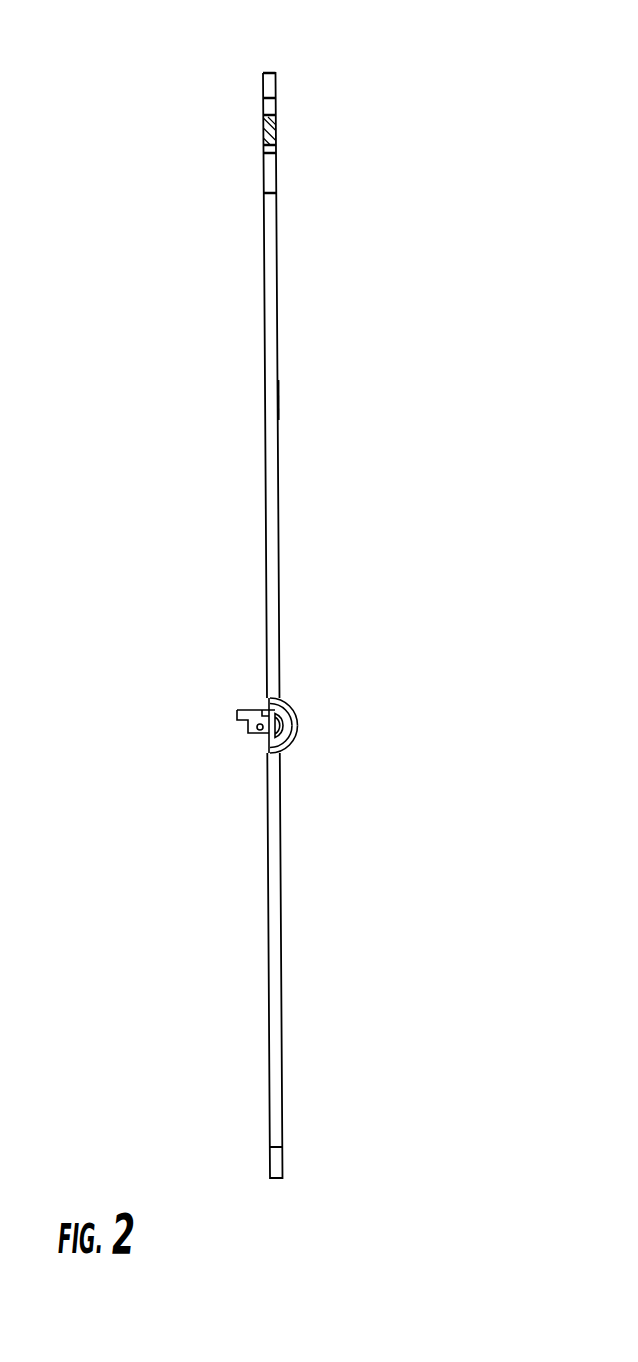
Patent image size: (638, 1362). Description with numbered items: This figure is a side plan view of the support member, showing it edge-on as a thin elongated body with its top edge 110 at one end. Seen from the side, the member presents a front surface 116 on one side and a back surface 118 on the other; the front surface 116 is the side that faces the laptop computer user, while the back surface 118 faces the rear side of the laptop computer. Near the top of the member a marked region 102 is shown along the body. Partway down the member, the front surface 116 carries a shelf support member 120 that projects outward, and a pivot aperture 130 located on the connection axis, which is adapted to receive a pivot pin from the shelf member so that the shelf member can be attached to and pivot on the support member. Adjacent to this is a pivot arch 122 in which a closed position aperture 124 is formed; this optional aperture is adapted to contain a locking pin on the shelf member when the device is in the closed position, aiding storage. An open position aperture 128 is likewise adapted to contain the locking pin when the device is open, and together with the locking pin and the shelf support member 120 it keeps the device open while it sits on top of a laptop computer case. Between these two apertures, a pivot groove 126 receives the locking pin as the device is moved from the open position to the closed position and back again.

The surgical instrument 102 is at (285, 141).
The top edge 110 is at (265, 72).
The front surface 116 is at (262, 428).
The back surface 118 is at (279, 390).
The shelf support member 120 is at (248, 702).
The pivot arch 122 is at (292, 705).
The closed position aperture 124 is at (280, 697).
The pivot groove 126 is at (295, 722).
The open position aperture 128 is at (293, 742).
The pivot aperture 130 is at (250, 732).